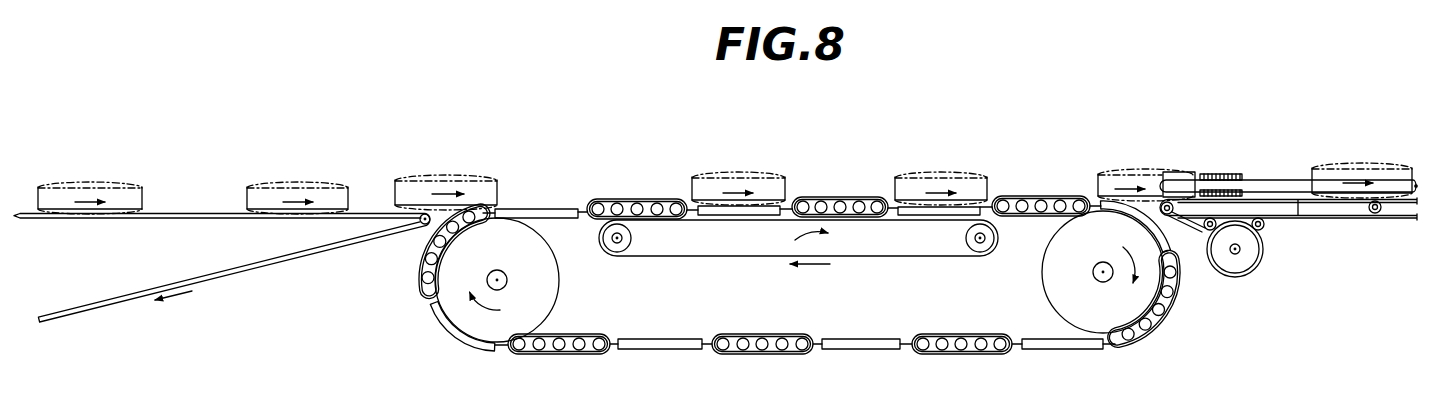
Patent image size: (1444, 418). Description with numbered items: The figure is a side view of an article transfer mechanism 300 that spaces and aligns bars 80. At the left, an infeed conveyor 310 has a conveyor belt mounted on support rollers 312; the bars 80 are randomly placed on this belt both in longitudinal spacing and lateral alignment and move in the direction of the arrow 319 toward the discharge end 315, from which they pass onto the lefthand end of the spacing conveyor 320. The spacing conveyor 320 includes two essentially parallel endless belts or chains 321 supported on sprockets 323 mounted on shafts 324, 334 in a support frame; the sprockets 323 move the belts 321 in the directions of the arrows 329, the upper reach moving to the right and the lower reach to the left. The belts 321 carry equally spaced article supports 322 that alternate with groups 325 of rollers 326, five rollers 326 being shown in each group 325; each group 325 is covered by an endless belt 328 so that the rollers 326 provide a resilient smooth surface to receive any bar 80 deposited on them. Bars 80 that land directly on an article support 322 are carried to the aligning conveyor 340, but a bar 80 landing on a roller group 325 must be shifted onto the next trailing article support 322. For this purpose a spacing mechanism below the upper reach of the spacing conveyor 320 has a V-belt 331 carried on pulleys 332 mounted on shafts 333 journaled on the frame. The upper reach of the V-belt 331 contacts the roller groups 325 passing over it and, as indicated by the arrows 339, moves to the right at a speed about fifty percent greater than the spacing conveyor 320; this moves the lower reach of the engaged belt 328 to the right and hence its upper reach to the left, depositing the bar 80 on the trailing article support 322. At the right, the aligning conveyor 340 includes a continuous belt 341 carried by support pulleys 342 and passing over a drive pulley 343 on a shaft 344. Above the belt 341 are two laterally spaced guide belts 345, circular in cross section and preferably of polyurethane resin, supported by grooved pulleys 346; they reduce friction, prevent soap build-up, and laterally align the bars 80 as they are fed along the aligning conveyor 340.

The article transfer mechanism 300 is at (200, 114).
The bars 80 is at (93, 181).
The discharge end 315 is at (413, 199).
The support rollers 312 is at (421, 218).
The arrow 319 is at (176, 225).
The infeed conveyor 310 is at (173, 318).
The spacing conveyor 320 is at (612, 143).
The article supports 322 is at (520, 206).
The groups of rollers 325 is at (641, 193).
The arrows 329 is at (729, 190).
The endless belts 321 is at (793, 201).
The endless belt 328 is at (826, 196).
The rollers 326 is at (846, 199).
The shafts 333 is at (626, 239).
The V-belt 331 is at (742, 277).
The belt travel direction 339 is at (805, 265).
The pulleys 332 is at (622, 252).
The wheel shaft 334 is at (507, 281).
The sprockets 323 is at (534, 312).
The shafts 324 is at (1097, 276).
The aligning conveyor 340 is at (1285, 115).
The pulleys 346 is at (1226, 174).
The guide belts 345 is at (1270, 180).
The continuous belt 341 is at (1300, 202).
The support pulleys 342 is at (1171, 214).
The drive pulley 343 is at (1250, 258).
The shaft 344 is at (1237, 255).